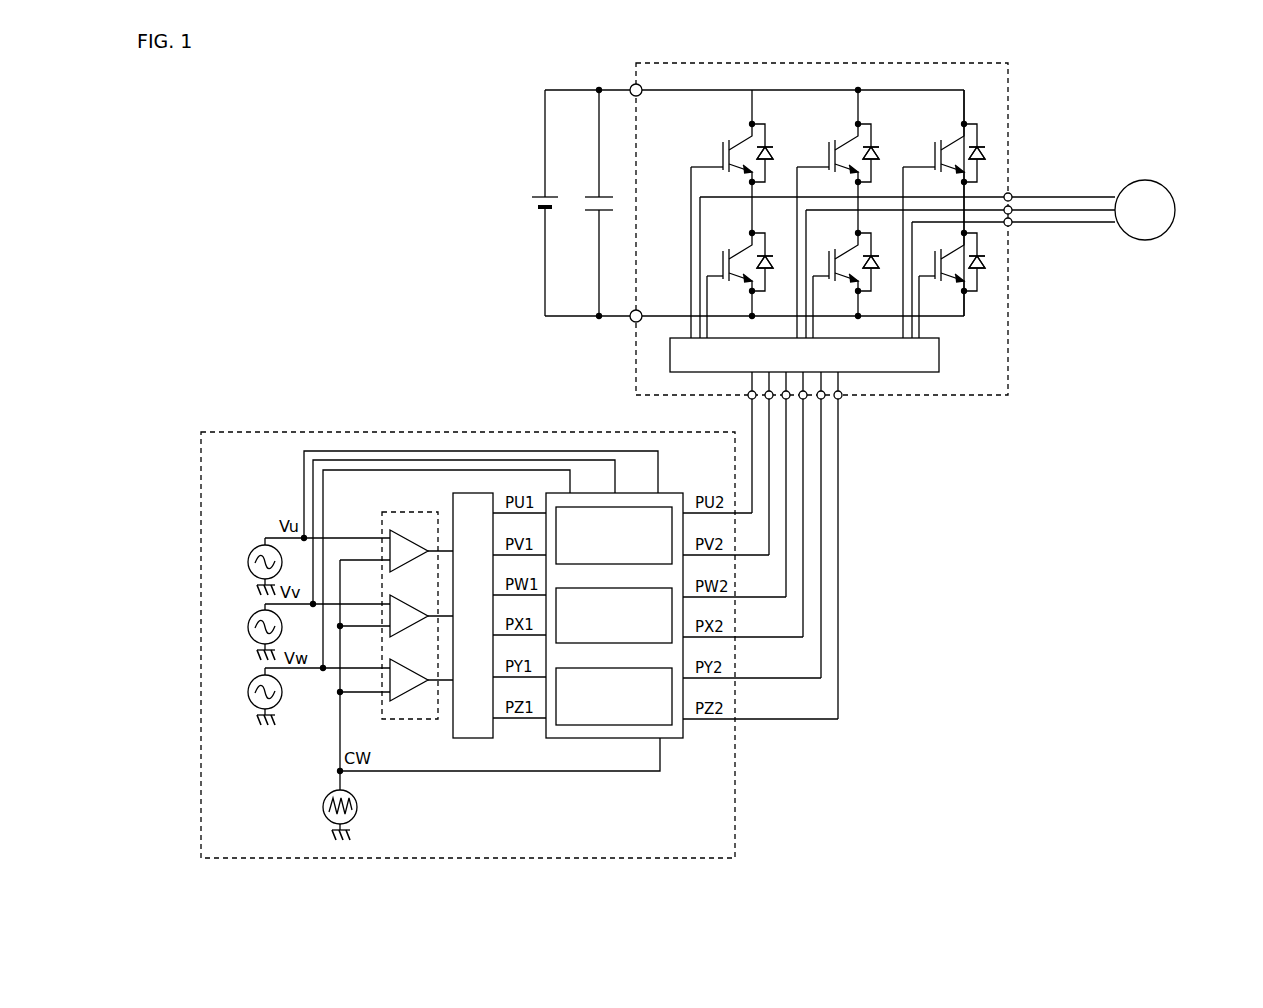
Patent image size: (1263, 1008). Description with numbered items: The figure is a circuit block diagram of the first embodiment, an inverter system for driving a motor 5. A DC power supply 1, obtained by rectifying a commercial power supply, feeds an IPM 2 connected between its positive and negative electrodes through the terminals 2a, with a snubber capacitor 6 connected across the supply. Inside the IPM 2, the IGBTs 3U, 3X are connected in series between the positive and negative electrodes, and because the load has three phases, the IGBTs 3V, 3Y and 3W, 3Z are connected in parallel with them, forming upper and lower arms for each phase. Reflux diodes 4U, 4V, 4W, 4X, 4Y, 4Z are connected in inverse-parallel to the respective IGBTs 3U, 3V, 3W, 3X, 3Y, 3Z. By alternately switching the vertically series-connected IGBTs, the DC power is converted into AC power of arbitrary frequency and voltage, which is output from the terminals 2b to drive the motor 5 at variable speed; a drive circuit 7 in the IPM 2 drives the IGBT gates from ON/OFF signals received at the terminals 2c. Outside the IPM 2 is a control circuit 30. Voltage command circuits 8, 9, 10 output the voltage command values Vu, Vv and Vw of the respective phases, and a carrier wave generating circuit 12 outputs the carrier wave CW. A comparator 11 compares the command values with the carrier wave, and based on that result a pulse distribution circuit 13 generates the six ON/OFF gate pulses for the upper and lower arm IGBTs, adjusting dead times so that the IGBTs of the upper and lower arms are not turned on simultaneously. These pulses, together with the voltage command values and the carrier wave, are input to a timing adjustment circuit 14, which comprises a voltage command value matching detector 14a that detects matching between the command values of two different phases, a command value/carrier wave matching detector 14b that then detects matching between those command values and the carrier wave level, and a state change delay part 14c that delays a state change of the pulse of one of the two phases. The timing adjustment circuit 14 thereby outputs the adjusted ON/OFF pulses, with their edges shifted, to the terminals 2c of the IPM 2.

The DC power supply 1 is at (538, 190).
The IPM 2 is at (1008, 96).
The terminals 2a is at (630, 85).
The terminals 2b is at (1011, 227).
The terminals 2c is at (842, 398).
The IGBT 3U is at (745, 128).
The IGBT 3V is at (851, 128).
The IGBT 3W is at (957, 128).
The IGBT 3X is at (745, 237).
The IGBT 3Y is at (851, 237).
The IGBT 3Z is at (957, 237).
The reflux diode 4U is at (766, 146).
The reflux diode 4V is at (872, 146).
The reflux diode 4W is at (978, 146).
The reflux diode 4X is at (768, 280).
The reflux diode 4Y is at (874, 280).
The reflux diode 4Z is at (980, 280).
The motor 5 is at (1167, 189).
The snubber capacitor 6 is at (590, 192).
The drive circuit 7 is at (940, 352).
The voltage command circuit 8 is at (248, 551).
The voltage command circuit 9 is at (248, 616).
The voltage command circuit 10 is at (248, 681).
The comparator 11 is at (405, 719).
The carrier wave generating circuit 12 is at (323, 807).
The pulse distribution circuit 13 is at (493, 735).
The timing adjustment circuit 14 is at (637, 618).
The voltage command value matching detector 14a is at (668, 507).
The command value/carrier wave matching detector 14b is at (672, 640).
The state change delay part 14c is at (641, 725).
The control circuit 30 is at (307, 432).